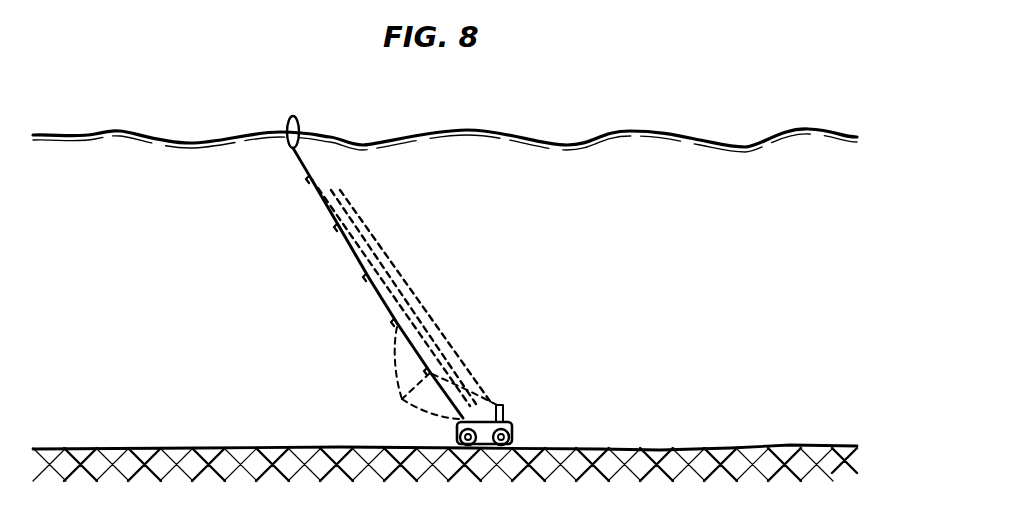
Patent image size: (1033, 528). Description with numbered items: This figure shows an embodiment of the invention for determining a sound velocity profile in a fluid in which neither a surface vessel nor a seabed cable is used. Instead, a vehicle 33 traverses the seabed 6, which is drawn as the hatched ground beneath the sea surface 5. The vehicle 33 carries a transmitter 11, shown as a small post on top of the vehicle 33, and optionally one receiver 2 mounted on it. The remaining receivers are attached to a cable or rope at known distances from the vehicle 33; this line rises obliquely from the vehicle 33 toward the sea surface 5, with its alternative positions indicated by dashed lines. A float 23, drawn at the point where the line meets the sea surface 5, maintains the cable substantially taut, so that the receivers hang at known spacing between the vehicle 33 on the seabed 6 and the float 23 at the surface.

The receiver 2 is at (400, 402).
The sea surface 5 is at (636, 131).
The seabed 6 is at (152, 447).
The transmitter 11 is at (504, 410).
The float 23 is at (294, 116).
The vehicle 33 is at (513, 431).